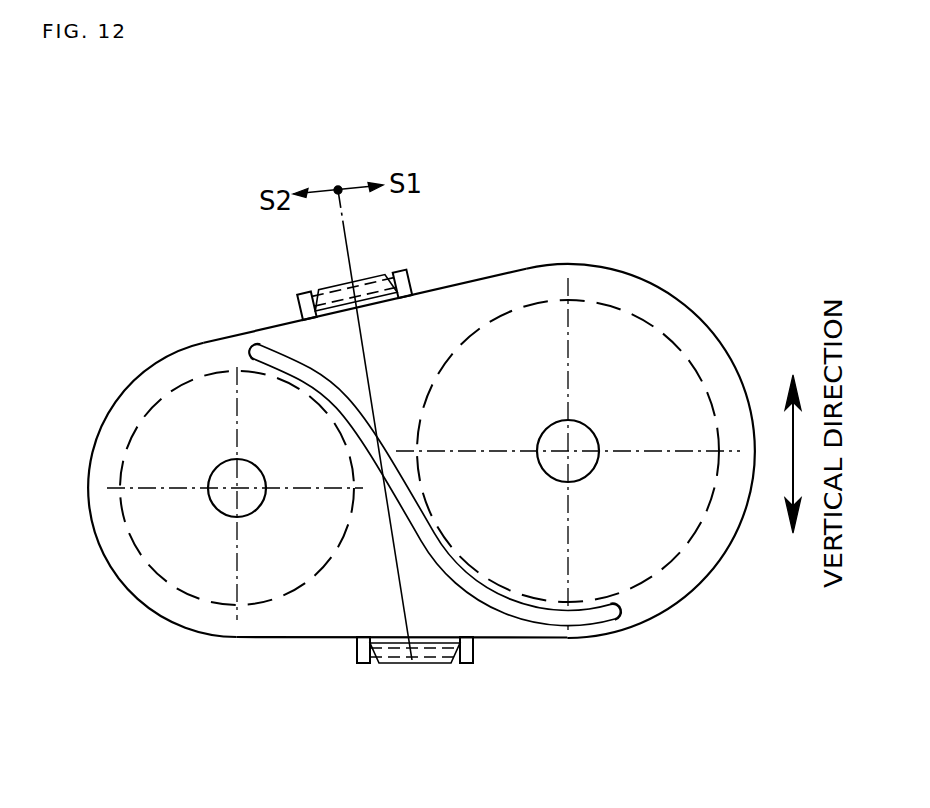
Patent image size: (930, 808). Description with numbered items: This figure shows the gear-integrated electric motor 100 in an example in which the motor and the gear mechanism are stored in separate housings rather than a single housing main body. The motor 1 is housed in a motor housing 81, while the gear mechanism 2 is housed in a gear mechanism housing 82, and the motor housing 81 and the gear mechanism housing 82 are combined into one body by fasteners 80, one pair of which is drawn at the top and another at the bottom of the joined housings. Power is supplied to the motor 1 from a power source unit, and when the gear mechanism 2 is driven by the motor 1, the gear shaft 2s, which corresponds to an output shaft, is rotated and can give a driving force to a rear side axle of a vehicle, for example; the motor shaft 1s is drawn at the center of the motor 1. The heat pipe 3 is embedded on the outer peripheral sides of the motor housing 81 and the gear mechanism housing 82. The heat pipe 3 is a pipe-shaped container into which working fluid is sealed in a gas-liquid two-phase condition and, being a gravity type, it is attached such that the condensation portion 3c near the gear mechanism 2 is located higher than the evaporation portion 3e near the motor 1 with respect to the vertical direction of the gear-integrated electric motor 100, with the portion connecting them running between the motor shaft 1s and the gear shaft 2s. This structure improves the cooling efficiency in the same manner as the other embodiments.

The gear-integrated electric motor 100 is at (450, 118).
The motor 1 is at (579, 455).
The motor shaft 1s is at (589, 474).
The gear mechanism 2 is at (201, 523).
The gear shaft 2s is at (215, 510).
The heat pipe 3 is at (443, 496).
The condensation portion 3c is at (283, 357).
The evaporation portion 3e is at (590, 614).
The fasteners 80 is at (405, 269).
The motor housing 81 is at (618, 270).
The gear mechanism housing 82 is at (152, 365).